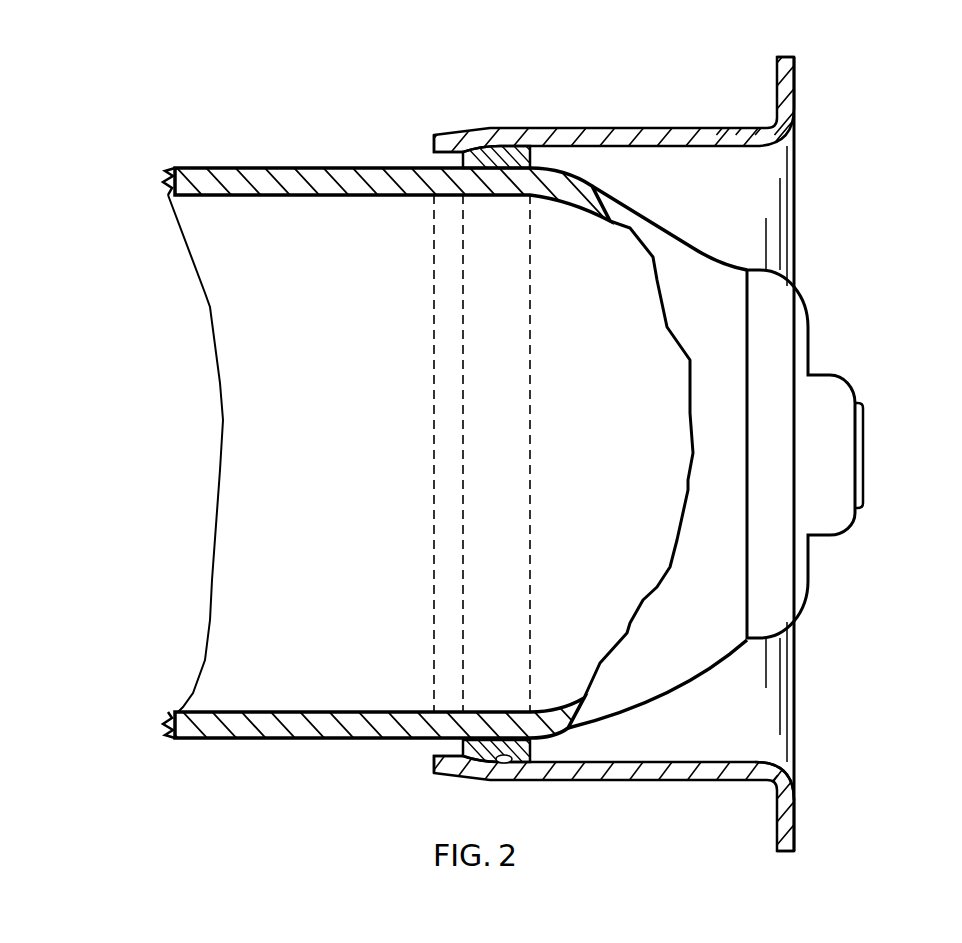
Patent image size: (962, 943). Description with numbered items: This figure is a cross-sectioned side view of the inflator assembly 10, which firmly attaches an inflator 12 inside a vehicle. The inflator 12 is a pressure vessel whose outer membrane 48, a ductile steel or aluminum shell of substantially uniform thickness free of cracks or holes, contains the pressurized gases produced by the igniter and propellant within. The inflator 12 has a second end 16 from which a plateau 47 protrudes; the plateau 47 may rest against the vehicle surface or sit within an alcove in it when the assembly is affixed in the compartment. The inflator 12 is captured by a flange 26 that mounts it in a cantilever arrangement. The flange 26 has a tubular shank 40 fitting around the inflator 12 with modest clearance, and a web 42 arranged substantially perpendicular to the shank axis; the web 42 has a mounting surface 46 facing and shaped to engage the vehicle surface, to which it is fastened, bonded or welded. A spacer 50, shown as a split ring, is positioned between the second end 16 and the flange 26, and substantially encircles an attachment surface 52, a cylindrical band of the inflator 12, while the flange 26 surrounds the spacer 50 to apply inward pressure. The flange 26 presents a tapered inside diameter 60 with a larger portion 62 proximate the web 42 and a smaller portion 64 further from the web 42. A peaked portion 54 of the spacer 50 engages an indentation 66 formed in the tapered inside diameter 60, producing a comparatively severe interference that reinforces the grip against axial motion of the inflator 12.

The inflator assembly 10 is at (489, 448).
The inflator 12 is at (517, 432).
The second end 16 is at (305, 442).
The flange 26 is at (608, 455).
The shank 40 is at (560, 128).
The web 42 is at (787, 93).
The mounting surface 46 is at (797, 68).
The plateau 47 is at (842, 447).
The outer membrane 48 is at (252, 175).
The spacer 50 is at (530, 156).
The attachment surface 52 is at (530, 465).
The peaked portion 54 is at (470, 150).
The tapered inside diameter 60 is at (635, 756).
The larger portion 62 is at (772, 760).
The smaller portion 64 is at (445, 757).
The indentation 66 is at (517, 757).